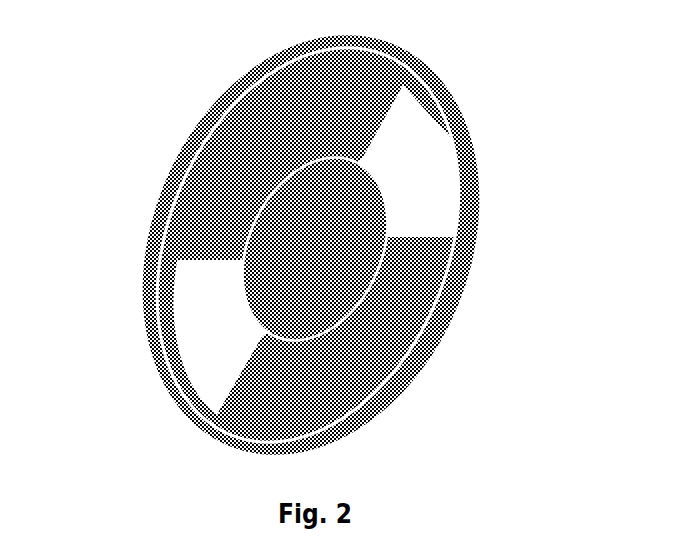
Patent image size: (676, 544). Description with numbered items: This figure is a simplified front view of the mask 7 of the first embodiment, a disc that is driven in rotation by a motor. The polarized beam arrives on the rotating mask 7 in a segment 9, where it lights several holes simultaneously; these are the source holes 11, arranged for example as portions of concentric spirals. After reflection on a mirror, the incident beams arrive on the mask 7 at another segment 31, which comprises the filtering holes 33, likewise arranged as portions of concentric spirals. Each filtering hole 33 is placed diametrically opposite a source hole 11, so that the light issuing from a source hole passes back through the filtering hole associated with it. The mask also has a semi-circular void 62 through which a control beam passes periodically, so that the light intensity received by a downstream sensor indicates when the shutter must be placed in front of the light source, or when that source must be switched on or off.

The mask 7 is at (476, 70).
The segment 9 is at (300, 113).
The source holes 11 is at (237, 180).
The segment 31 is at (417, 278).
The filtering holes 33 is at (368, 358).
The semi-circular void 62 is at (167, 357).